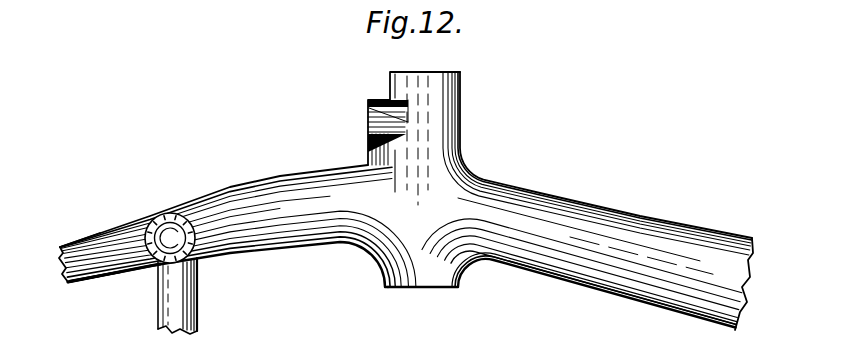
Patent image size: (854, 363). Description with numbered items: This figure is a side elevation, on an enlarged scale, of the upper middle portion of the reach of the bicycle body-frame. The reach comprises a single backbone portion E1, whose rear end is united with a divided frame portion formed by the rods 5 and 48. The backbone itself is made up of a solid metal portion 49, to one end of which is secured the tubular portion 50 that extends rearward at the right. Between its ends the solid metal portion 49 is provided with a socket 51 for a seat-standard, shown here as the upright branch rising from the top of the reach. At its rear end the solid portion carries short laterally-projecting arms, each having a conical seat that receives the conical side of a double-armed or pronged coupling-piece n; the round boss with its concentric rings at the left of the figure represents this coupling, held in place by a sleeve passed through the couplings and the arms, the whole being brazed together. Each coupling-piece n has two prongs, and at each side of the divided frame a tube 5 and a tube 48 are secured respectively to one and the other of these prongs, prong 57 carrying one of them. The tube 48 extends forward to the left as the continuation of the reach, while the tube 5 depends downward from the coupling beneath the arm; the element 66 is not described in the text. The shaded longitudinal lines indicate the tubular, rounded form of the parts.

The tube 48 is at (76, 245).
The solid metal portion 49 is at (283, 184).
The tubular portion 50 is at (547, 186).
The socket 51 is at (560, 163).
The prong of coupling 57 is at (127, 242).
The depending stem 66 is at (182, 276).
The tube 5 is at (177, 344).
The double-armed coupling-piece n is at (95, 291).
The backbone portion E1 is at (619, 164).